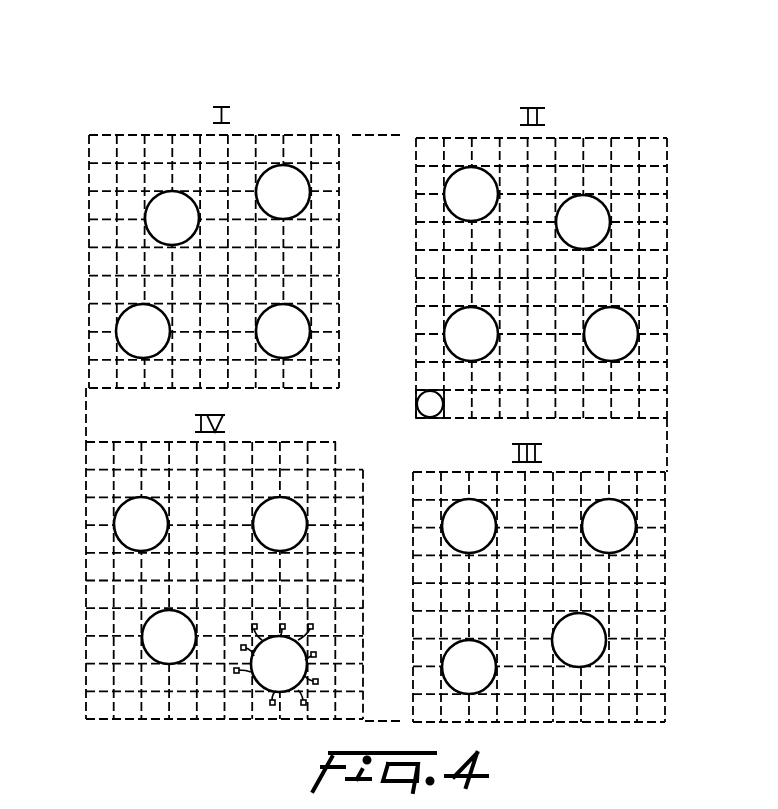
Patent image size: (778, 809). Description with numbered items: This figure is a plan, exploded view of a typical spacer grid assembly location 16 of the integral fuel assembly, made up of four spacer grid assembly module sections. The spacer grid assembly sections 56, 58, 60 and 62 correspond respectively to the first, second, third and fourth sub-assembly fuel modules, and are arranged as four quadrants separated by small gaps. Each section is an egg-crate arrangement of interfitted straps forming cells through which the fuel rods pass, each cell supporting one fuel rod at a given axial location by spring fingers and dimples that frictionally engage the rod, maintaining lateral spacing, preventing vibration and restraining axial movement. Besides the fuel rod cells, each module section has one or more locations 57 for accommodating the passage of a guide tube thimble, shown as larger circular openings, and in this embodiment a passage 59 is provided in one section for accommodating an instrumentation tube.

The layout array 16 is at (382, 408).
The spacer grid assembly section 56 is at (220, 241).
The guide tube thimble location 57 is at (153, 222).
The spacer grid assembly section 58 is at (541, 284).
The instrumentation tube passage 59 is at (429, 413).
The spacer grid assembly section 60 is at (663, 486).
The spacer grid assembly section 62 is at (90, 477).